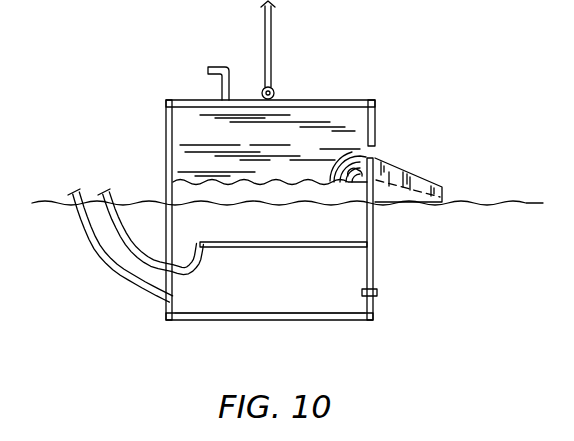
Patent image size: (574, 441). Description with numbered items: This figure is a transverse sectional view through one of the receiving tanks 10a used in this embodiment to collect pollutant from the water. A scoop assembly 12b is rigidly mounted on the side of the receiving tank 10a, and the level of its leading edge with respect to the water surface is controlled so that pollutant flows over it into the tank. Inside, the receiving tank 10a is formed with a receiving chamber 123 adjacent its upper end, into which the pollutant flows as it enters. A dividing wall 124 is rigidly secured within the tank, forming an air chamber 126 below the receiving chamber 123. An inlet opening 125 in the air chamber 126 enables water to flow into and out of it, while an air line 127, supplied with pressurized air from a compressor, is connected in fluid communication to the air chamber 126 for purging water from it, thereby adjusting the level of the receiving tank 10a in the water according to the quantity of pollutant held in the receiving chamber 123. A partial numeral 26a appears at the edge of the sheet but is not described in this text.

The receiving tank 10a is at (294, 84).
The scoop assembly 12b is at (398, 152).
The adjacent component (partial label) 26a is at (17, 6).
The receiving chamber 123 is at (188, 125).
The dividing wall 124 is at (340, 250).
The inlet opening 125 is at (378, 296).
The air chamber 126 is at (302, 287).
The air line 127 is at (93, 242).